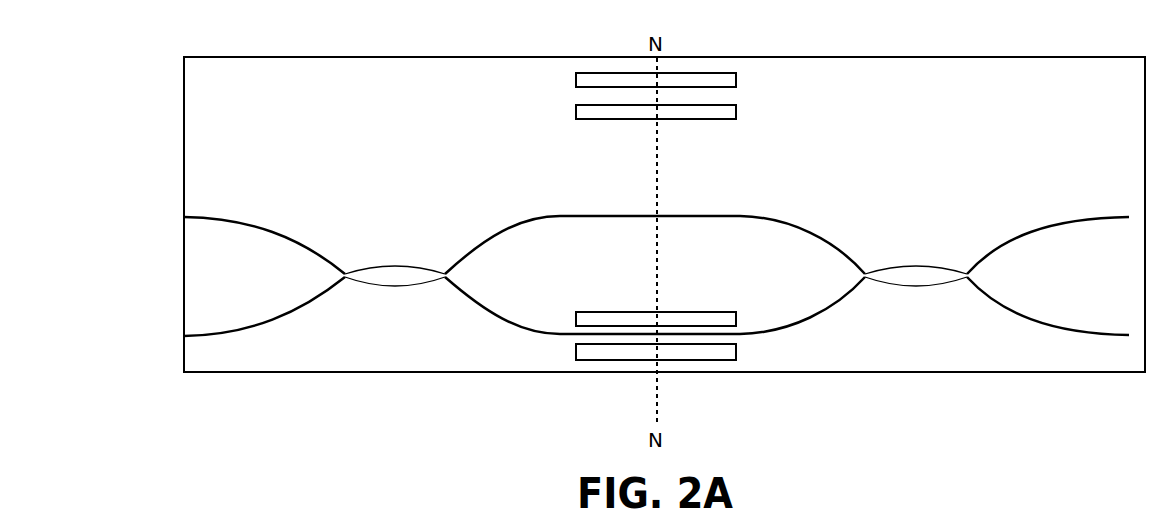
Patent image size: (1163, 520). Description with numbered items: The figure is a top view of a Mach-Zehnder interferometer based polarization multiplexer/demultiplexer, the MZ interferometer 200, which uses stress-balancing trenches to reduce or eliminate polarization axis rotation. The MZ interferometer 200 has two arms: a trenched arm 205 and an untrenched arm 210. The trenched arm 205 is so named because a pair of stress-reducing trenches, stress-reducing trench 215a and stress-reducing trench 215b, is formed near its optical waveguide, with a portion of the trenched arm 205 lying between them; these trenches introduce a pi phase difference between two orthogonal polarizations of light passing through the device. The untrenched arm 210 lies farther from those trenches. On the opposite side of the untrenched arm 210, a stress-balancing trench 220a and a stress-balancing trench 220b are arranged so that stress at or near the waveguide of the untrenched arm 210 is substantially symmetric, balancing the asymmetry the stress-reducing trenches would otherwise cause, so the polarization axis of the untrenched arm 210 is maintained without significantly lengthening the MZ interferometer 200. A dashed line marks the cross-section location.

The MZ interferometer 200 is at (148, 57).
The trenched arm 205 is at (535, 333).
The untrenched arm 210 is at (537, 218).
The stress-reducing trench 215a is at (621, 320).
The stress-reducing trench 215b is at (622, 350).
The stress-balancing trench 220a is at (595, 112).
The stress-balancing trench 220b is at (596, 78).